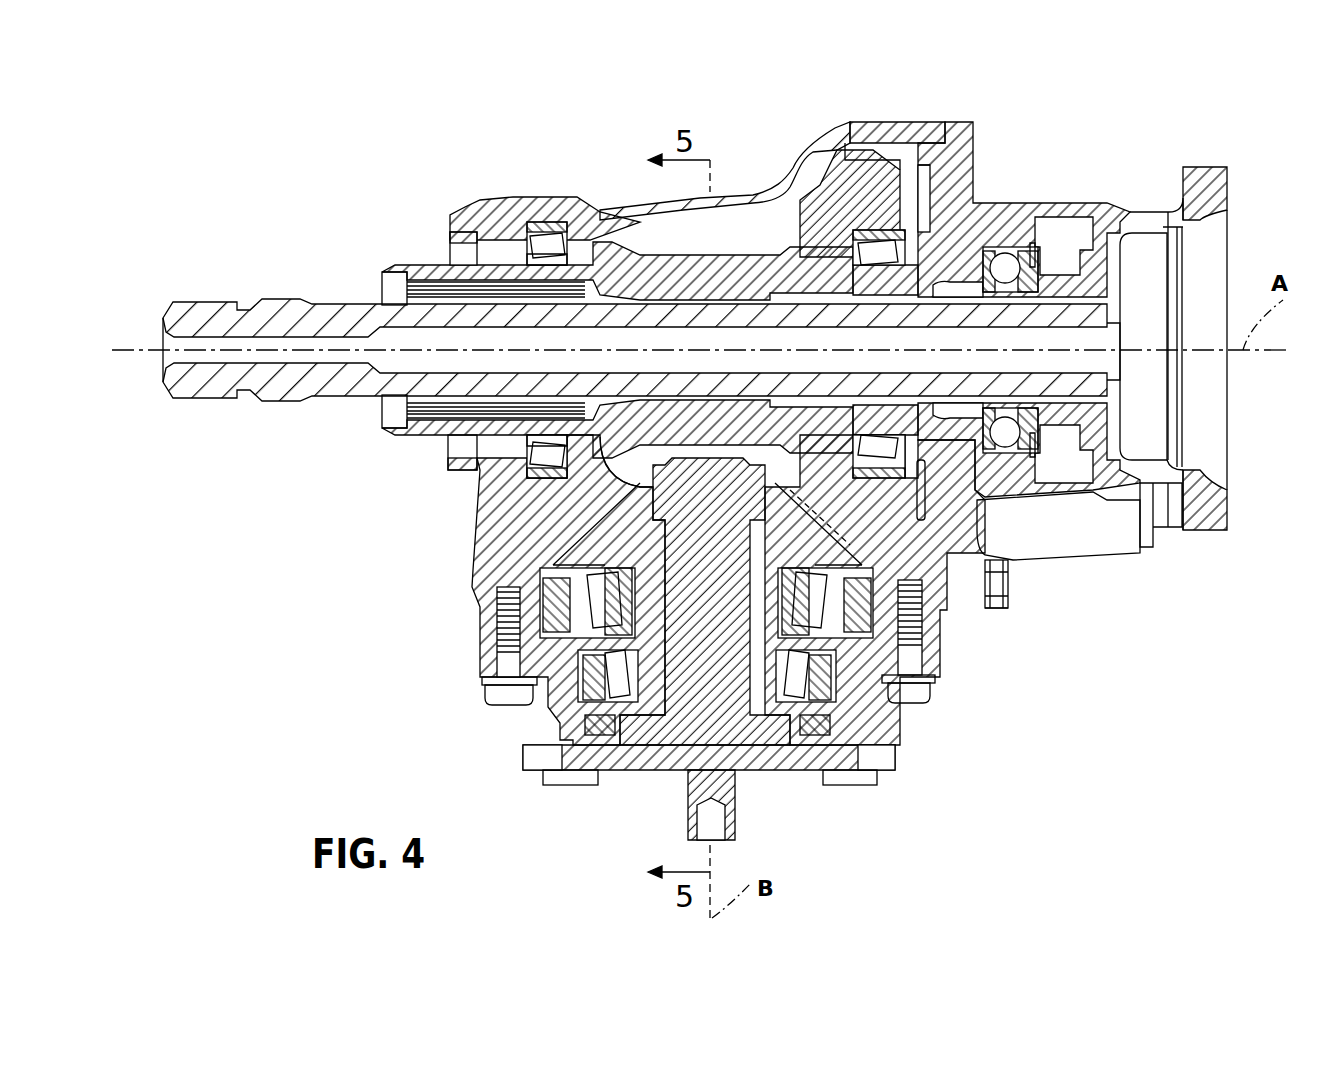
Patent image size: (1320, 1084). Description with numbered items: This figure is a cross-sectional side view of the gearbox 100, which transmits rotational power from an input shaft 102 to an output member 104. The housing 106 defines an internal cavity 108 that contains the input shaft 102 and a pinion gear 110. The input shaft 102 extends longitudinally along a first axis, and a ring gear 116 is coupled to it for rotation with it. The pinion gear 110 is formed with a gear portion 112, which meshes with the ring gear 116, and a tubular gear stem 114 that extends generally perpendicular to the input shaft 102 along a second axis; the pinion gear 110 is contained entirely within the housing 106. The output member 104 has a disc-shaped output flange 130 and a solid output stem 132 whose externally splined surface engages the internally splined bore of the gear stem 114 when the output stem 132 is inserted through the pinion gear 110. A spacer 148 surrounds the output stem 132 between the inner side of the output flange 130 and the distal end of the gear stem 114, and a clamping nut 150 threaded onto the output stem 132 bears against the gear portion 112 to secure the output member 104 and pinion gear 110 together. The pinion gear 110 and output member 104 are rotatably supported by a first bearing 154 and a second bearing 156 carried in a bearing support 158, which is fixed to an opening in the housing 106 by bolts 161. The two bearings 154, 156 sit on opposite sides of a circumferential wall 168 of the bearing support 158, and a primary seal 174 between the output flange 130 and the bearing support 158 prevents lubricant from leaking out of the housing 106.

The gearbox 100 is at (1003, 750).
The input shaft 102 is at (1207, 165).
The output member 104 is at (793, 780).
The housing 106 is at (897, 120).
The internal cavity 108 is at (690, 213).
The pinion gear 110 is at (567, 520).
The gear portion 112 is at (570, 547).
The gear stem 114 is at (648, 600).
The ring gear 116 is at (915, 505).
The output flange 130 is at (668, 772).
The output stem 132 is at (840, 685).
The spacer 148 is at (767, 772).
The clamping nut 150 is at (655, 465).
The first bearing 154 is at (830, 603).
The second bearing 156 is at (600, 680).
The bearing support 158 is at (517, 617).
The bolts 161 is at (486, 692).
The circumferential wall 168 is at (830, 640).
The primary seal 174 is at (590, 748).